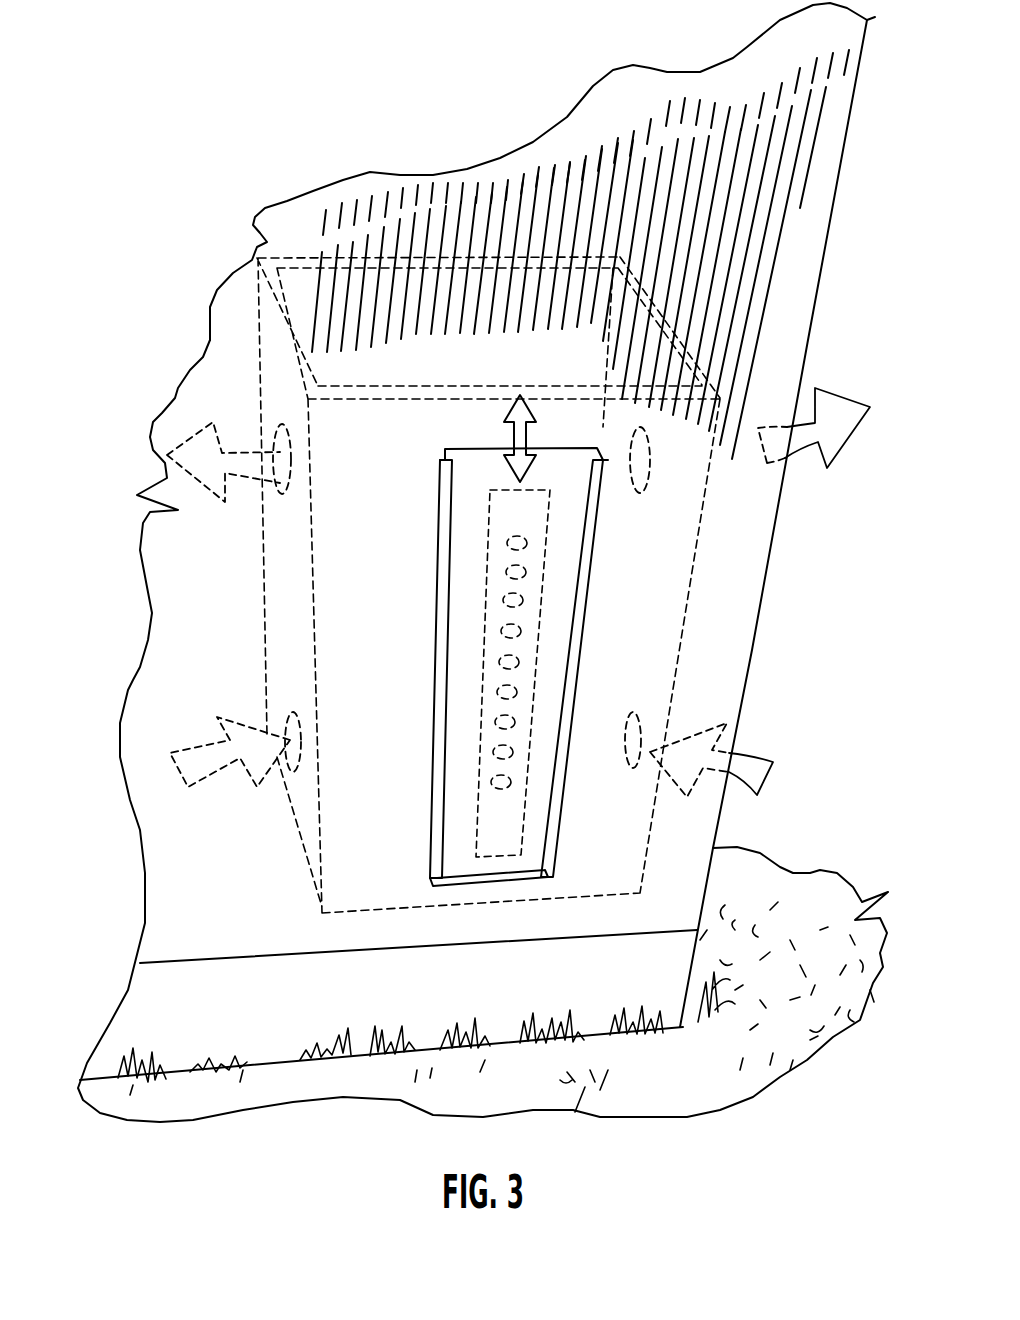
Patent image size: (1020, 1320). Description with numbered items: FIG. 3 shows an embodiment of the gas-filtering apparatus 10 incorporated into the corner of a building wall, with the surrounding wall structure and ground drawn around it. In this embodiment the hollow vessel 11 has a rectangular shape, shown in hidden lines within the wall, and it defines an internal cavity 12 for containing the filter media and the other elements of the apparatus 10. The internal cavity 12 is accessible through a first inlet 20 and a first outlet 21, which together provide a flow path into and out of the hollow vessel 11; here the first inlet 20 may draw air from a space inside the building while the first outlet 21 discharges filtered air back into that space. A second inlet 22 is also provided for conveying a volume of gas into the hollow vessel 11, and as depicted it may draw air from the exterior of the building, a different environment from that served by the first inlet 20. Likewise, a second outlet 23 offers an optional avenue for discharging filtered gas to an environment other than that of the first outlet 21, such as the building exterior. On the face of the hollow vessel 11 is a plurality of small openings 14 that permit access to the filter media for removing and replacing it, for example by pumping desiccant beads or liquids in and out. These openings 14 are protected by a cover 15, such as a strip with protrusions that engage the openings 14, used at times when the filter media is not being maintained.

The apparatus 10 is at (172, 624).
The hollow vessel 11 is at (257, 380).
The internal cavity 12 is at (417, 368).
The opening 14 is at (524, 600).
The cover 15 is at (527, 870).
The first inlet 20 is at (293, 762).
The first outlet 21 is at (280, 490).
The second inlet 22 is at (640, 768).
The second outlet 23 is at (652, 473).